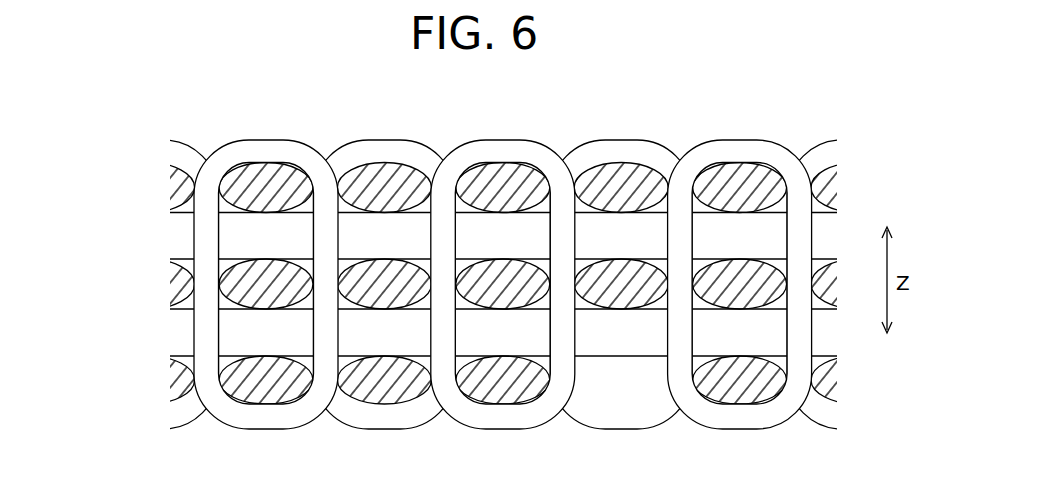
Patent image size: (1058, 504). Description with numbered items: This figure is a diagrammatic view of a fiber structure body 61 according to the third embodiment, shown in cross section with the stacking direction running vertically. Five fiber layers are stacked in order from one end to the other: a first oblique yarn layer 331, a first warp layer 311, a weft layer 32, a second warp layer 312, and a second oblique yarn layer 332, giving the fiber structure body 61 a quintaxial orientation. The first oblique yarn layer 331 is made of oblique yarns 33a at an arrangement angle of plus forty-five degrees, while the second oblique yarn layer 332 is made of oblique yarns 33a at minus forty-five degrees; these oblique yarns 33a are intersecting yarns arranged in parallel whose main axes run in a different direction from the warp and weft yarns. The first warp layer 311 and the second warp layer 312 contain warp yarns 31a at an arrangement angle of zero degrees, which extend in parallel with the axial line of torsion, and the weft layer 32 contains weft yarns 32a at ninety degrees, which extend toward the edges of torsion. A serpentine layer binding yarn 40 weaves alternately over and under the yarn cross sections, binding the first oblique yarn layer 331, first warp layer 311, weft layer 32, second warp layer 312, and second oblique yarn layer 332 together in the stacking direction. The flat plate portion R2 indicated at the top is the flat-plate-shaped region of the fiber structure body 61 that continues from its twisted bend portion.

The first oblique yarn layer 331 is at (157, 188).
The first warp layer 311 is at (157, 238).
The weft layer 32 is at (157, 285).
The second warp layer 312 is at (157, 333).
The second oblique yarn layer 332 is at (157, 380).
The oblique yarn 33a is at (287, 172).
The warp yarn 31a is at (627, 228).
The weft yarn 32a is at (620, 298).
The layer binding yarn 40 is at (415, 142).
The fiber structure body 61 is at (373, 140).
The flat plate portion R2 is at (490, 139).